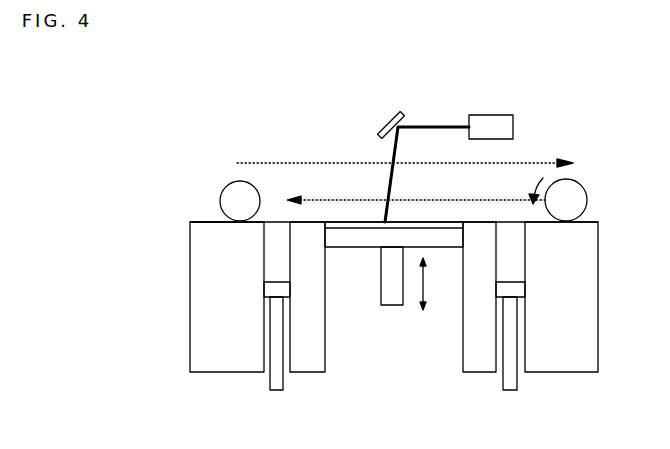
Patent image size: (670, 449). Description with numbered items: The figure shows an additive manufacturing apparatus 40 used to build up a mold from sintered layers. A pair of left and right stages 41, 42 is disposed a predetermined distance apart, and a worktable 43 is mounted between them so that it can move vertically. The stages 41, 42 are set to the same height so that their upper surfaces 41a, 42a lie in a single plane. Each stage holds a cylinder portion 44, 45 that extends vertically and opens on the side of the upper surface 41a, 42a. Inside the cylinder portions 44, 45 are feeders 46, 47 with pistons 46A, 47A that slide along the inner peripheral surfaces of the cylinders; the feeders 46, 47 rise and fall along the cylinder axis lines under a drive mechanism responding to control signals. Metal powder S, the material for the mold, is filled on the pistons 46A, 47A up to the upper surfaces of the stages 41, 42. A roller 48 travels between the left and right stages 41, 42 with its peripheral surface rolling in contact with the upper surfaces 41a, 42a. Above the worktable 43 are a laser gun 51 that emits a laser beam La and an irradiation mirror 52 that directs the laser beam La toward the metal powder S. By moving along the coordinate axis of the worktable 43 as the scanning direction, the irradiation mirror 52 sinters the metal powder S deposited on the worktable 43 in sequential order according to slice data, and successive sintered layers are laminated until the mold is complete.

The additive manufacturing apparatus 40 is at (185, 85).
The left stage 41 is at (207, 252).
The right stage 42 is at (575, 245).
The upper surface of left stage 41a is at (202, 221).
The upper surface of right stage 42a is at (587, 217).
The worktable 43 is at (362, 240).
The cylinder portion 44 is at (285, 358).
The cylinder portion 45 is at (506, 356).
The feeder 46 is at (273, 378).
The feeder 47 is at (512, 378).
The piston 46A is at (277, 288).
The piston 47A is at (513, 290).
The roller 48 is at (240, 180).
The laser gun 51 is at (493, 125).
The irradiation mirror 52 is at (393, 112).
The laser beam La is at (437, 125).
The metal powder S is at (275, 237).